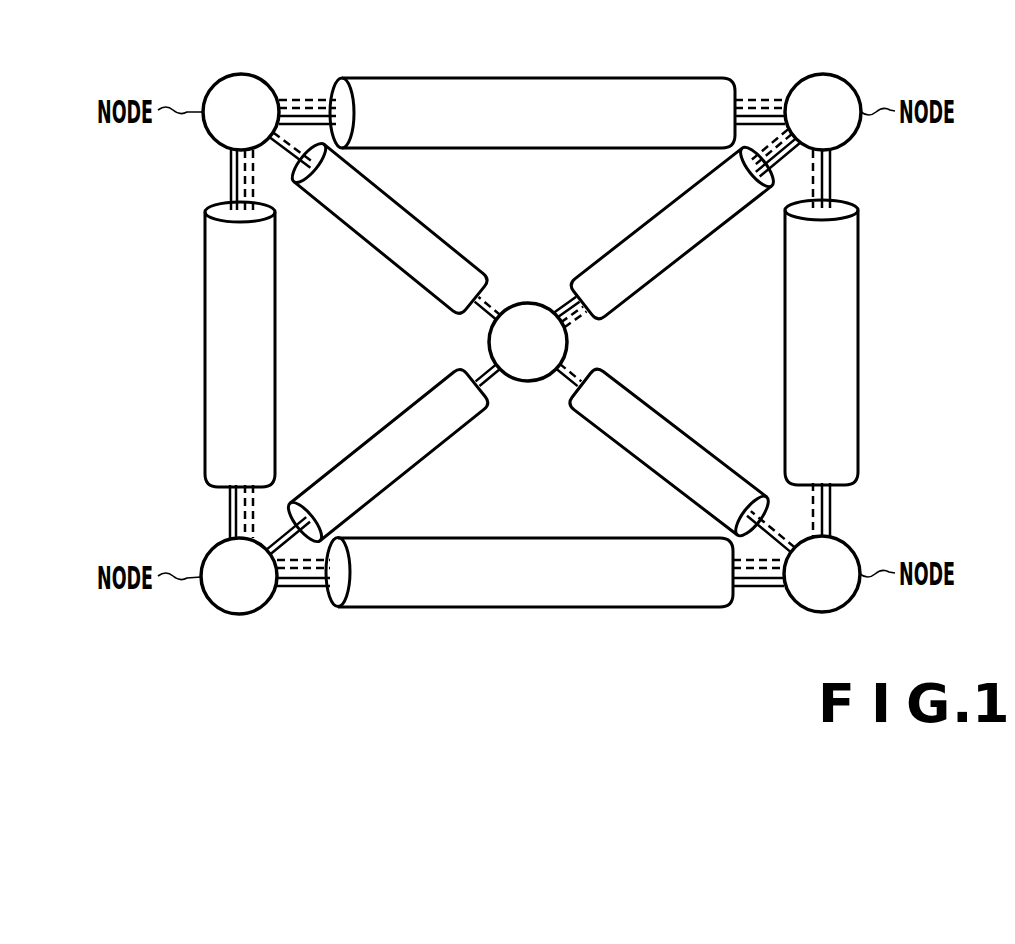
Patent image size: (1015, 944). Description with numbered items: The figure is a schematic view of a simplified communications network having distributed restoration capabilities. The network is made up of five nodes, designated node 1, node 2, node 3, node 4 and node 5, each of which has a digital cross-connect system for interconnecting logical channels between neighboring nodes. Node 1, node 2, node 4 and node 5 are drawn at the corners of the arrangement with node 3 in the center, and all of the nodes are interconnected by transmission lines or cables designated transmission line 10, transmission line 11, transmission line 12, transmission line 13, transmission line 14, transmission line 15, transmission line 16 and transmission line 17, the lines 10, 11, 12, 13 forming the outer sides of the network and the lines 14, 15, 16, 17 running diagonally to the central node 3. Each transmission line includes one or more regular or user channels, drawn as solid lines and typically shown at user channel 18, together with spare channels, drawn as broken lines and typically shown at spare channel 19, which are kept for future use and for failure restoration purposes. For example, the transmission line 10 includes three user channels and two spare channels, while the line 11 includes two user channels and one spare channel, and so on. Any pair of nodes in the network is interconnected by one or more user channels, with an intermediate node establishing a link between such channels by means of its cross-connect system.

The node 1 is at (241, 112).
The node 2 is at (823, 112).
The node 3 is at (528, 342).
The node 4 is at (239, 576).
The node 5 is at (822, 574).
The transmission line 10 is at (443, 78).
The transmission line 11 is at (858, 275).
The transmission line 12 is at (538, 538).
The transmission line 13 is at (205, 290).
The transmission line 14 is at (622, 241).
The transmission line 15 is at (711, 452).
The transmission line 16 is at (375, 437).
The transmission line 17 is at (456, 249).
The user channel 18 is at (228, 515).
The spare channel 19 is at (300, 590).